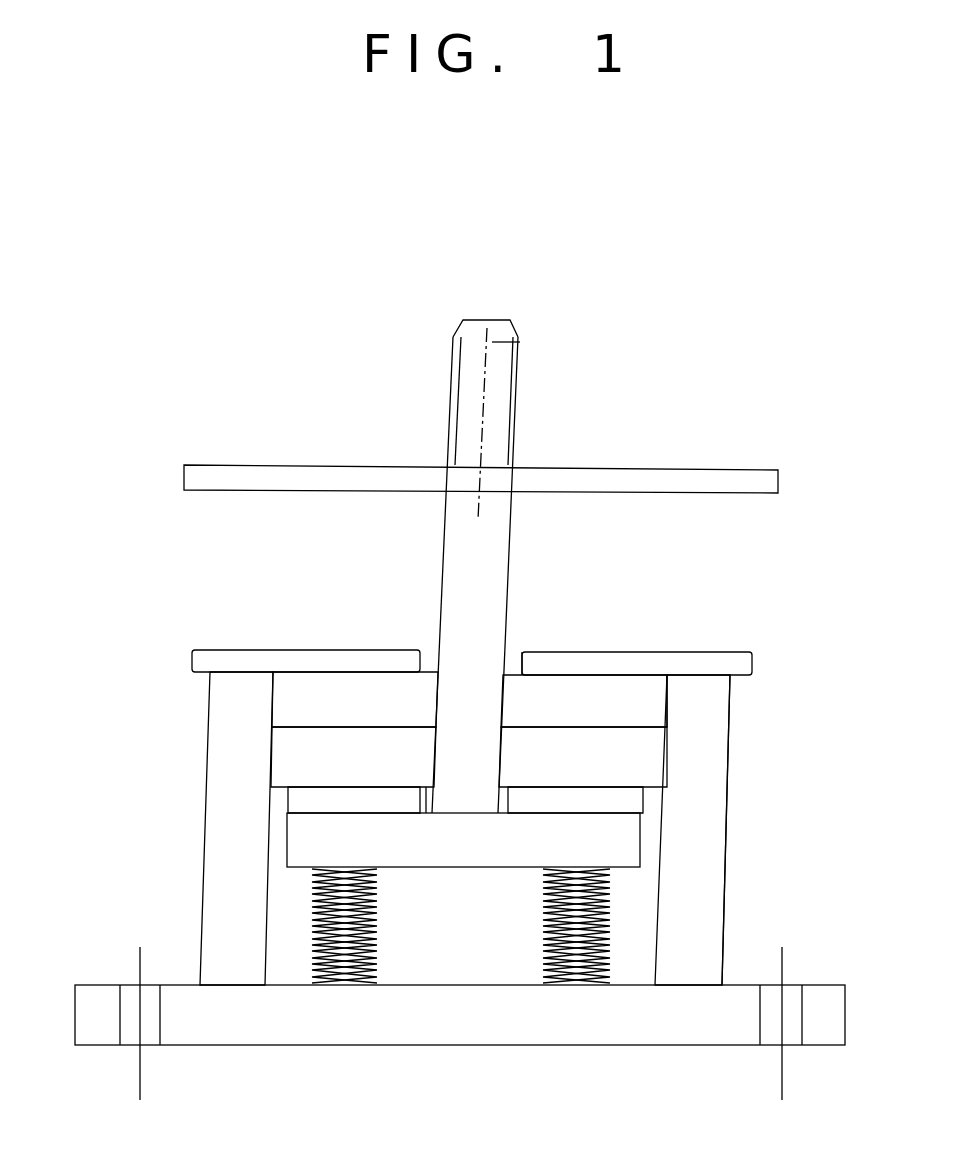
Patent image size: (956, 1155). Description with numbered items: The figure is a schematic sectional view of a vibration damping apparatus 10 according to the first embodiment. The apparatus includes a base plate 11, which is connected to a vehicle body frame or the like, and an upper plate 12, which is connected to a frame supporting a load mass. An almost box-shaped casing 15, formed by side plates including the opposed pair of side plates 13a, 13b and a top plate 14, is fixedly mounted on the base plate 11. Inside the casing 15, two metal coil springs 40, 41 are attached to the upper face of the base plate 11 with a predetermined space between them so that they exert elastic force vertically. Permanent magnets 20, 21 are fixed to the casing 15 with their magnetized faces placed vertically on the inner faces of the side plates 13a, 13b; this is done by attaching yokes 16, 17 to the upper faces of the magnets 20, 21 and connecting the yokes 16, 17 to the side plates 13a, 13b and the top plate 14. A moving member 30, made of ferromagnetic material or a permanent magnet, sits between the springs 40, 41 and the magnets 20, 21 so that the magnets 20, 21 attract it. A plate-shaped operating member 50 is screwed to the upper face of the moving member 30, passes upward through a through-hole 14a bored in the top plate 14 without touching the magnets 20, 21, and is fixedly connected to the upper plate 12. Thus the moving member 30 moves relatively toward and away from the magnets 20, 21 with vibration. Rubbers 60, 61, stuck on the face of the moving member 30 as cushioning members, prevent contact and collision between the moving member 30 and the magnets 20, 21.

The vibration damping apparatus 10 is at (787, 578).
The base plate 11 is at (258, 1030).
The upper plate 12 is at (634, 478).
The side plate 13a is at (698, 893).
The side plate 13b is at (218, 800).
The top plate 14 is at (618, 652).
The through-hole 14a is at (522, 668).
The casing 15 is at (744, 764).
The yoke 16 is at (640, 690).
The yoke 17 is at (312, 690).
The magnet 20 is at (655, 742).
The magnet 21 is at (286, 742).
The moving member 30 is at (625, 850).
The metal spring 40 is at (612, 952).
The metal spring 41 is at (376, 948).
The operating member 50 is at (497, 590).
The rubber 60 is at (628, 802).
The rubber 61 is at (300, 805).